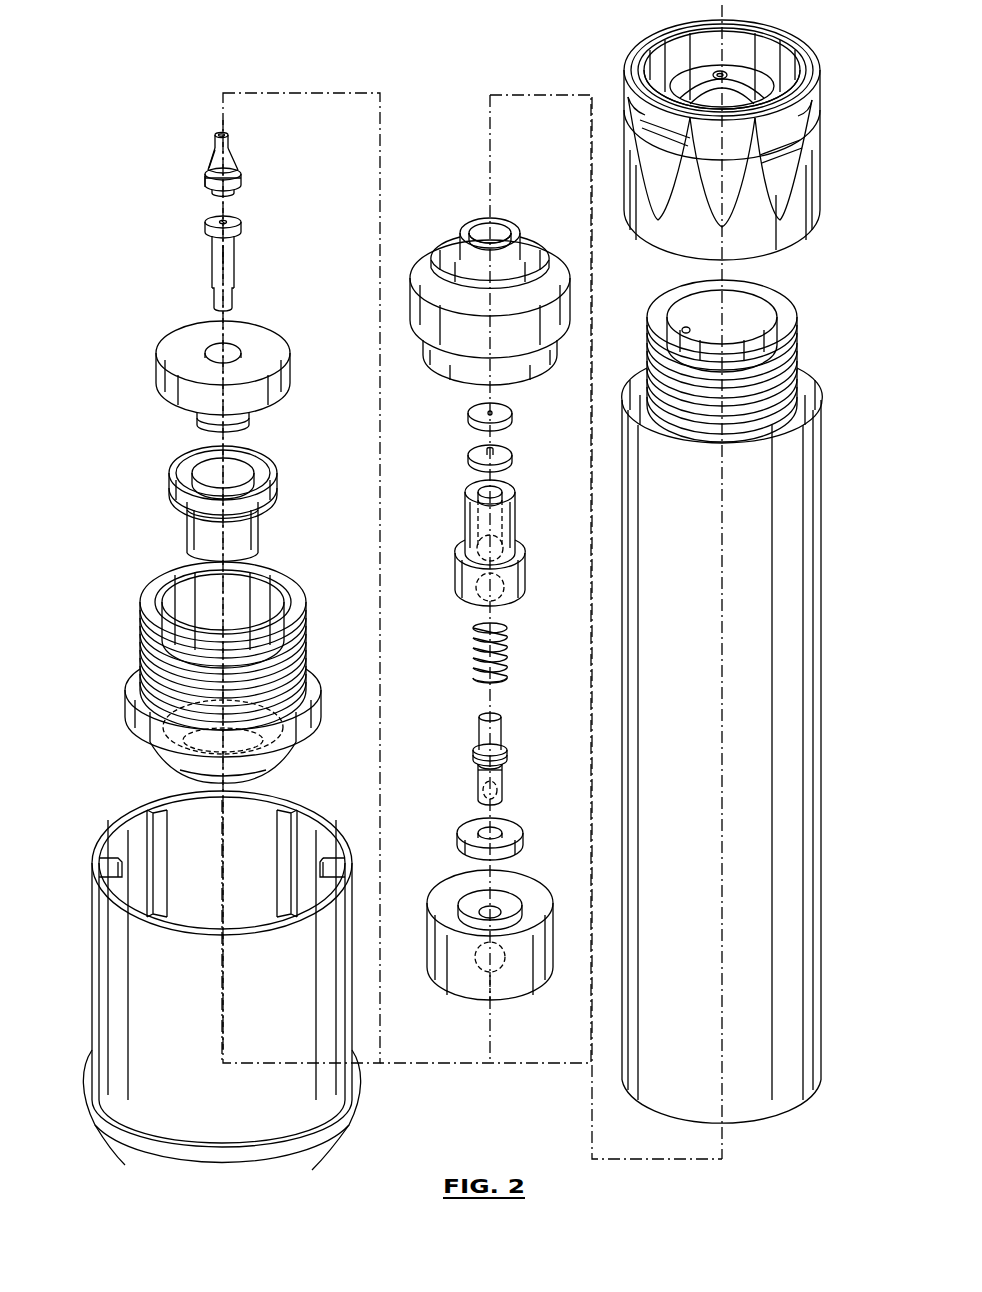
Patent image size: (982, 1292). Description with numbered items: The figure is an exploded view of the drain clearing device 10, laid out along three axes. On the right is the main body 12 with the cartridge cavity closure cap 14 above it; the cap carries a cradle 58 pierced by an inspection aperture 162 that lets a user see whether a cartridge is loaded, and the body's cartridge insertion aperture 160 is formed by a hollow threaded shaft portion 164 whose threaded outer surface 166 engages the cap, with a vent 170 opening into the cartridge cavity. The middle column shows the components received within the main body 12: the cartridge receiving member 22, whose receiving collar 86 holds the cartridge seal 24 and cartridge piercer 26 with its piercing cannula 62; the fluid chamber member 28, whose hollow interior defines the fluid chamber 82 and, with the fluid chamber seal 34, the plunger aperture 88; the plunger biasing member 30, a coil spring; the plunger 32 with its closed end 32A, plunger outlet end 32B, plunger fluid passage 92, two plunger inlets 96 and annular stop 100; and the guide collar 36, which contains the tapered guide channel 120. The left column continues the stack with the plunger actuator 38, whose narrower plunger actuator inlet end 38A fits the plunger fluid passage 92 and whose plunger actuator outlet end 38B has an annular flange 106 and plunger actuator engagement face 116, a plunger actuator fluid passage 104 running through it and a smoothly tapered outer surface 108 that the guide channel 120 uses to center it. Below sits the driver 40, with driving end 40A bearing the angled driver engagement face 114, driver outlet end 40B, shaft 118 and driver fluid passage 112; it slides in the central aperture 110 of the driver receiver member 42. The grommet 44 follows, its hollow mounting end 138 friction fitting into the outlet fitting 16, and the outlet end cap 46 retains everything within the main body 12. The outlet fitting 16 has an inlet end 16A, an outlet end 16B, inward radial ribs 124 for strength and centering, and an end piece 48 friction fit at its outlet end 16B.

The drain clearing device 10 is at (180, 100).
The main body 12 is at (738, 1105).
The cartridge cavity closure cap 14 is at (630, 100).
The outlet fitting 16 is at (322, 1084).
The inlet end 16A is at (122, 808).
The outlet end 16B is at (88, 1116).
The cartridge receiving member 22 is at (560, 306).
The cartridge seal 24 is at (514, 411).
The cartridge piercer 26 is at (512, 458).
The fluid chamber member 28 is at (516, 515).
The plunger biasing member 30 is at (508, 652).
The plunger 32 is at (493, 730).
The closed end 32A is at (478, 722).
The plunger outlet end 32B is at (478, 806).
The fluid chamber seal 34 is at (510, 823).
The guide collar 36 is at (524, 968).
The plunger actuator 38 is at (236, 157).
The plunger actuator inlet end 38A is at (209, 142).
The plunger actuator outlet end 38B is at (202, 176).
The driver 40 is at (236, 262).
The driving end 40A is at (201, 222).
The driver outlet end 40B is at (206, 301).
The driver receiver member 42 is at (272, 346).
The grommet 44 is at (272, 480).
The outlet end cap 46 is at (306, 628).
The end piece 48 is at (312, 1137).
The cradle 58 is at (690, 80).
The piercing cannula 62 is at (495, 450).
The fluid chamber 82 is at (500, 533).
The receiving collar 86 is at (510, 226).
The plunger aperture 88 is at (506, 596).
The plunger fluid passage 92 is at (500, 788).
The plunger inlets 96 is at (503, 768).
The annular stop 100 is at (507, 752).
The plunger actuator fluid passage 104 is at (226, 136).
The annular flange 106 is at (242, 183).
The outer surface 108 is at (230, 150).
The central aperture 110 is at (232, 346).
The driver fluid passage 112 is at (230, 220).
The driver engagement face 114 is at (218, 220).
The plunger actuator engagement face 116 is at (206, 182).
The shaft 118 is at (226, 276).
The guide channel 120 is at (485, 972).
The radial ribs 124 is at (338, 850).
The mounting end 138 is at (250, 532).
The cartridge insertion aperture 160 is at (740, 322).
The inspection aperture 162 is at (722, 72).
The threaded shaft portion 164 is at (778, 302).
The threaded outer surface 166 is at (652, 352).
The vent 170 is at (688, 328).